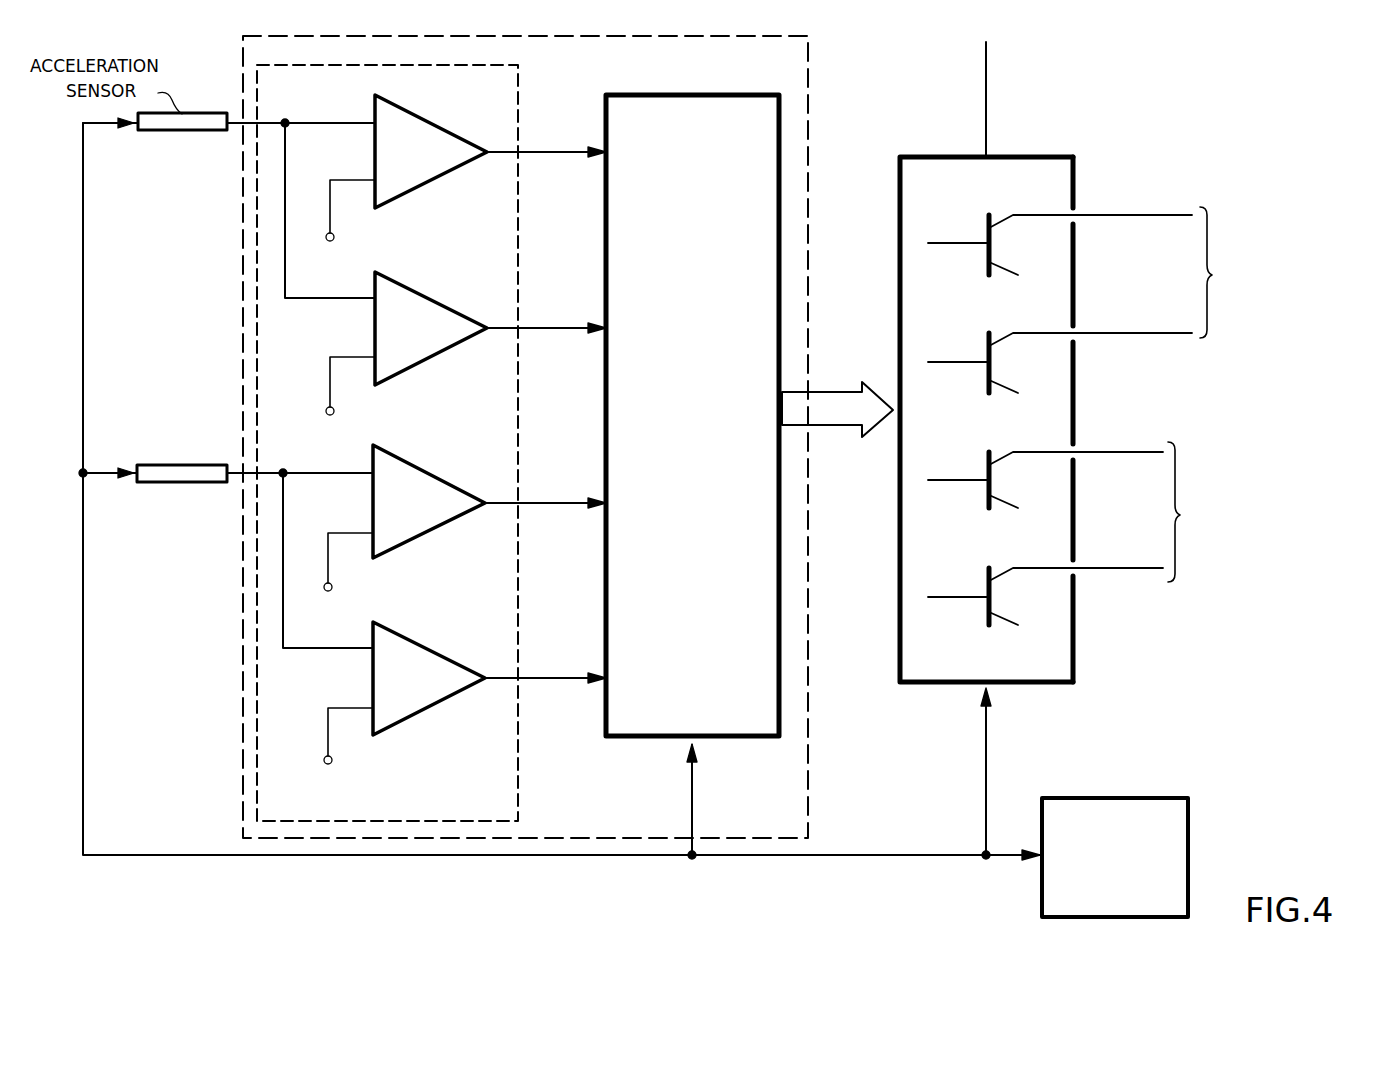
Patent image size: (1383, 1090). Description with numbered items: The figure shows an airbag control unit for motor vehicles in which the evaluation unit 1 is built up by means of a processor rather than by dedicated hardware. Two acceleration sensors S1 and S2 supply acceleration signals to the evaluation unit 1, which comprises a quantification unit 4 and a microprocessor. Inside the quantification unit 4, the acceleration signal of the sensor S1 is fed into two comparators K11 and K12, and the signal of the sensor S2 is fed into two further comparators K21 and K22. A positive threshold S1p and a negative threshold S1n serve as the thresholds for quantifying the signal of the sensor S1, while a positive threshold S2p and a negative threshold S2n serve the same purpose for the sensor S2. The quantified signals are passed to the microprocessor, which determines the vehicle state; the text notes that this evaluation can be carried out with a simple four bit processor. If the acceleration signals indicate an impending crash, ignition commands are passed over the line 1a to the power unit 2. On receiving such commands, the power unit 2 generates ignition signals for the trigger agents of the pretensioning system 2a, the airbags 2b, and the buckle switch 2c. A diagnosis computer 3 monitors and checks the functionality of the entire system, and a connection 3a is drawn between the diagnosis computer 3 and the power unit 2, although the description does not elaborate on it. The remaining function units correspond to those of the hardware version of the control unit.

The evaluation unit 1 is at (810, 793).
The line 1a is at (848, 430).
The power unit 2 is at (1078, 172).
The pretensioning system 2a is at (1213, 275).
The airbags 2b is at (1181, 515).
The buckle switch 2c is at (988, 72).
The diagnosis computer 3 is at (1167, 798).
The signal line between diagnosis computer and output stage 3a is at (988, 758).
The quantification unit 4 is at (518, 790).
The acceleration sensor S1 is at (180, 132).
The acceleration sensor S2 is at (181, 484).
The comparator K11 is at (452, 128).
The comparator K12 is at (460, 306).
The comparator K21 is at (458, 480).
The comparator K22 is at (446, 656).
The positive threshold S1p is at (335, 235).
The negative threshold S1n is at (335, 409).
The positive threshold S2p is at (333, 585).
The negative threshold S2n is at (333, 758).